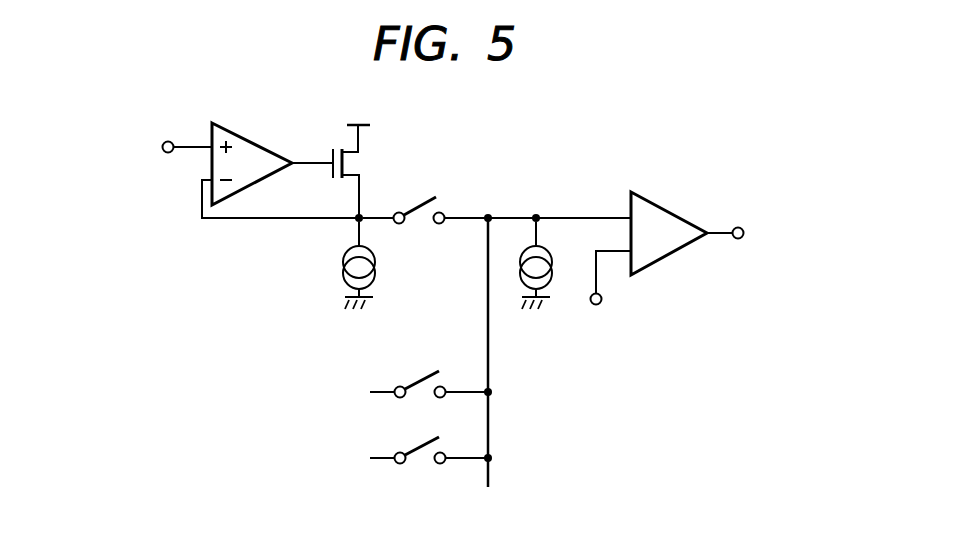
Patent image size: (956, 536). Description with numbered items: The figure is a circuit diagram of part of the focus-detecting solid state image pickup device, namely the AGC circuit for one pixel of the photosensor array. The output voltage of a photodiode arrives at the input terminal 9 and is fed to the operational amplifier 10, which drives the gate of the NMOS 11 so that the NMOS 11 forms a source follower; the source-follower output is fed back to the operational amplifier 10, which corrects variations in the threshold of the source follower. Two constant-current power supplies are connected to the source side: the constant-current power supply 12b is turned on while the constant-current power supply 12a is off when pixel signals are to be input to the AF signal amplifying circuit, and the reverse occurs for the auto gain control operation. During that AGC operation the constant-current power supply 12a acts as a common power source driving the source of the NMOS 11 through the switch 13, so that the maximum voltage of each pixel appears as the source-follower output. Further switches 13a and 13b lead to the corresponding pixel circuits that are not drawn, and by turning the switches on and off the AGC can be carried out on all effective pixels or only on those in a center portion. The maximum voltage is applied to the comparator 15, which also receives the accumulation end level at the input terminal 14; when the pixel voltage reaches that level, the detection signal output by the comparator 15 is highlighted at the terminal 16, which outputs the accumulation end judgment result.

The input terminal 9 is at (163, 145).
The operational amplifier 10 is at (240, 136).
The NMOS 11 is at (358, 161).
The constant-current power supply 12a is at (551, 251).
The constant-current power supply 12b is at (343, 275).
The switch 13 is at (445, 202).
The switch 13a is at (440, 381).
The switch 13b is at (440, 446).
The input terminal 14 is at (597, 305).
The comparator 15 is at (657, 202).
The terminal 16 is at (740, 227).